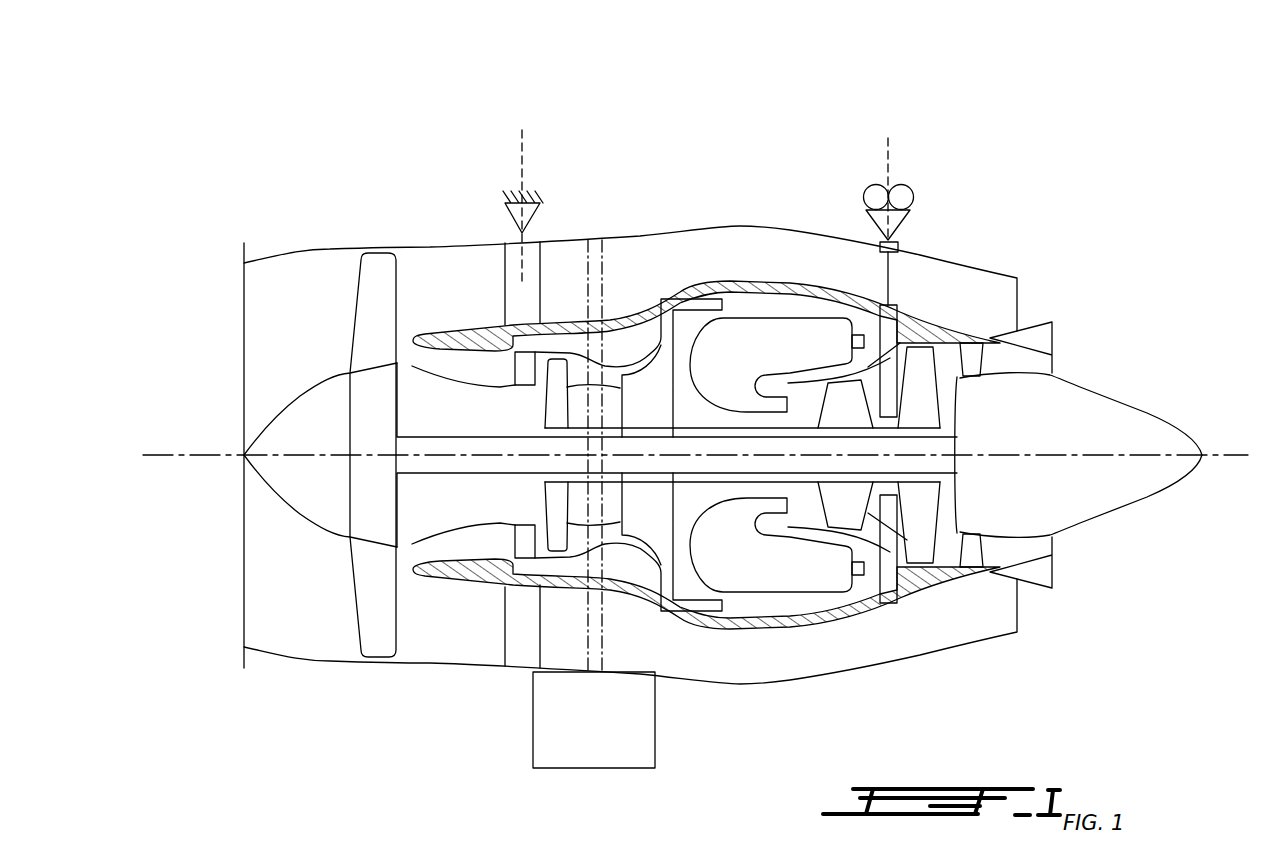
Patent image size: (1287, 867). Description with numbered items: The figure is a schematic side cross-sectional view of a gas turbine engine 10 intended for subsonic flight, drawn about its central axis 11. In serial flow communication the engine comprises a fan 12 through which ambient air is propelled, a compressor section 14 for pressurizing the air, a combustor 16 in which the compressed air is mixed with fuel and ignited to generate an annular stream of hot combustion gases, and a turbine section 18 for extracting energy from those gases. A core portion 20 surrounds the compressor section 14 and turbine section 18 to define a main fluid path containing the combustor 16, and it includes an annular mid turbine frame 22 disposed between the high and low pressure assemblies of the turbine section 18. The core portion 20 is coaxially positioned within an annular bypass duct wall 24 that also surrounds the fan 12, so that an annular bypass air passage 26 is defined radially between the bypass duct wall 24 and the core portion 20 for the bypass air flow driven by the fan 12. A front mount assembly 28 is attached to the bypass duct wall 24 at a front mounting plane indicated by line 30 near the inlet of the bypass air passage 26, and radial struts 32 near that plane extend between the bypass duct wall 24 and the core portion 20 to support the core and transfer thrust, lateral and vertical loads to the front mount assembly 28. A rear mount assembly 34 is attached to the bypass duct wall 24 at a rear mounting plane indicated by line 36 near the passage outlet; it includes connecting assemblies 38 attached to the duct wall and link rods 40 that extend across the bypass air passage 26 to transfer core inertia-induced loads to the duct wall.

The gas turbine engine 10 is at (1117, 218).
The engine central axis 11 is at (1230, 452).
The fan 12 is at (370, 587).
The compressor section 14 is at (588, 370).
The combustor 16 is at (740, 337).
The turbine section 18 is at (842, 336).
The core portion 20 is at (790, 280).
The mid turbine frame 22 is at (887, 507).
The annular bypass duct wall 24 is at (443, 252).
The annular bypass air passage 26 is at (629, 267).
The front mount assembly 28 is at (533, 190).
The line 30 is at (522, 147).
The radial struts 32 is at (513, 292).
The rear mount assembly 34 is at (910, 238).
The line 36 is at (888, 145).
The connecting assemblies 38 is at (908, 240).
The link rods 40 is at (880, 246).